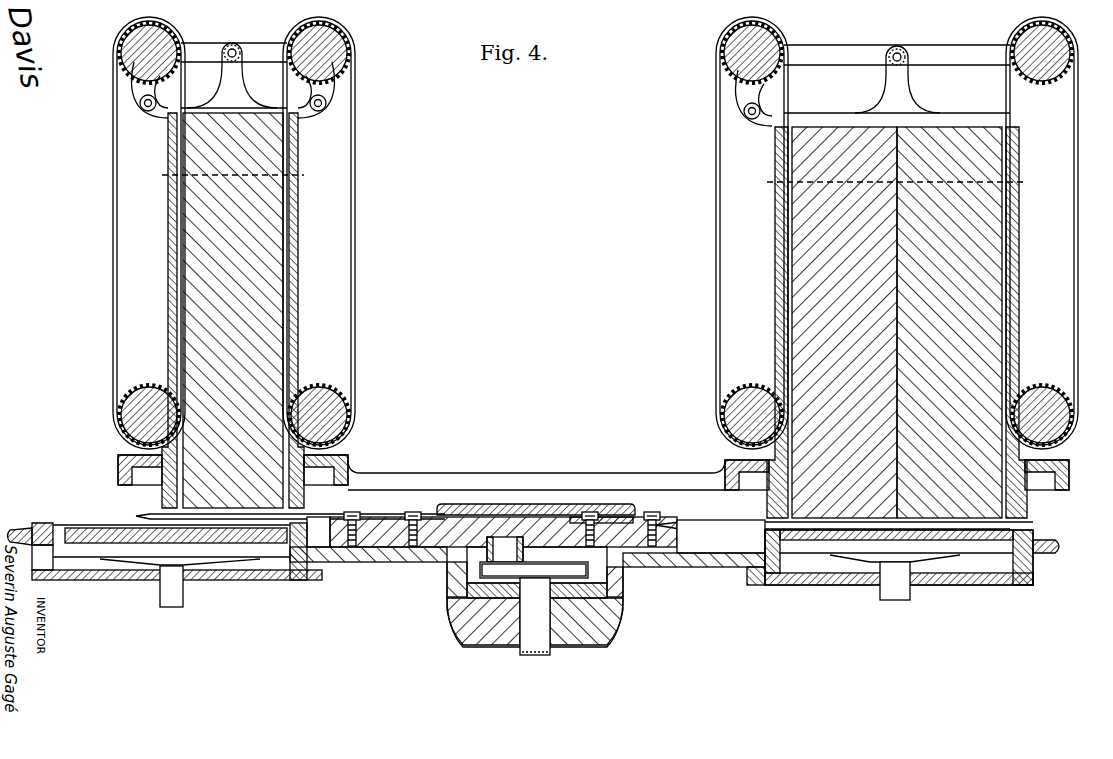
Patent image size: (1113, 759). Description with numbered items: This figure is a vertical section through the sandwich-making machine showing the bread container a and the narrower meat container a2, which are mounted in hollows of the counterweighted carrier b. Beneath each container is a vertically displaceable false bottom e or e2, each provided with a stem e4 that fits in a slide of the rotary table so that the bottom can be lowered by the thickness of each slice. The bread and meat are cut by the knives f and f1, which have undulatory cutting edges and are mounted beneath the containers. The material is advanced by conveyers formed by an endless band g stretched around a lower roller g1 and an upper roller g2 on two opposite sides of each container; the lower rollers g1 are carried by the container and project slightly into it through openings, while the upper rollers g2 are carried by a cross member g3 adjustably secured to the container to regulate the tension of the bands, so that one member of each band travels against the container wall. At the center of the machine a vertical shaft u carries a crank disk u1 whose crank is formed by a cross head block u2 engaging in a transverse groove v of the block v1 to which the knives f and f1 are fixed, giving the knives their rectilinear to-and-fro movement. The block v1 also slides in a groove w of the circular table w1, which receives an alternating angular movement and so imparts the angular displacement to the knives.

The container a is at (778, 278).
The container a2 is at (170, 310).
The carrier b is at (536, 477).
The false bottom e is at (975, 553).
The false bottom e2 is at (111, 550).
The stem e4 is at (535, 584).
The knife f is at (1010, 527).
The knife f1 is at (145, 516).
The endless band g is at (113, 318).
The lower roller g1 is at (137, 388).
The upper roller g2 is at (118, 58).
The cross member g3 is at (227, 47).
The vertical shaft u is at (535, 616).
The crank disk u1 is at (534, 570).
The cross head block u2 is at (505, 558).
The transverse groove v is at (490, 540).
The block v1 is at (645, 517).
The groove w is at (536, 532).
The circular table w1 is at (402, 562).